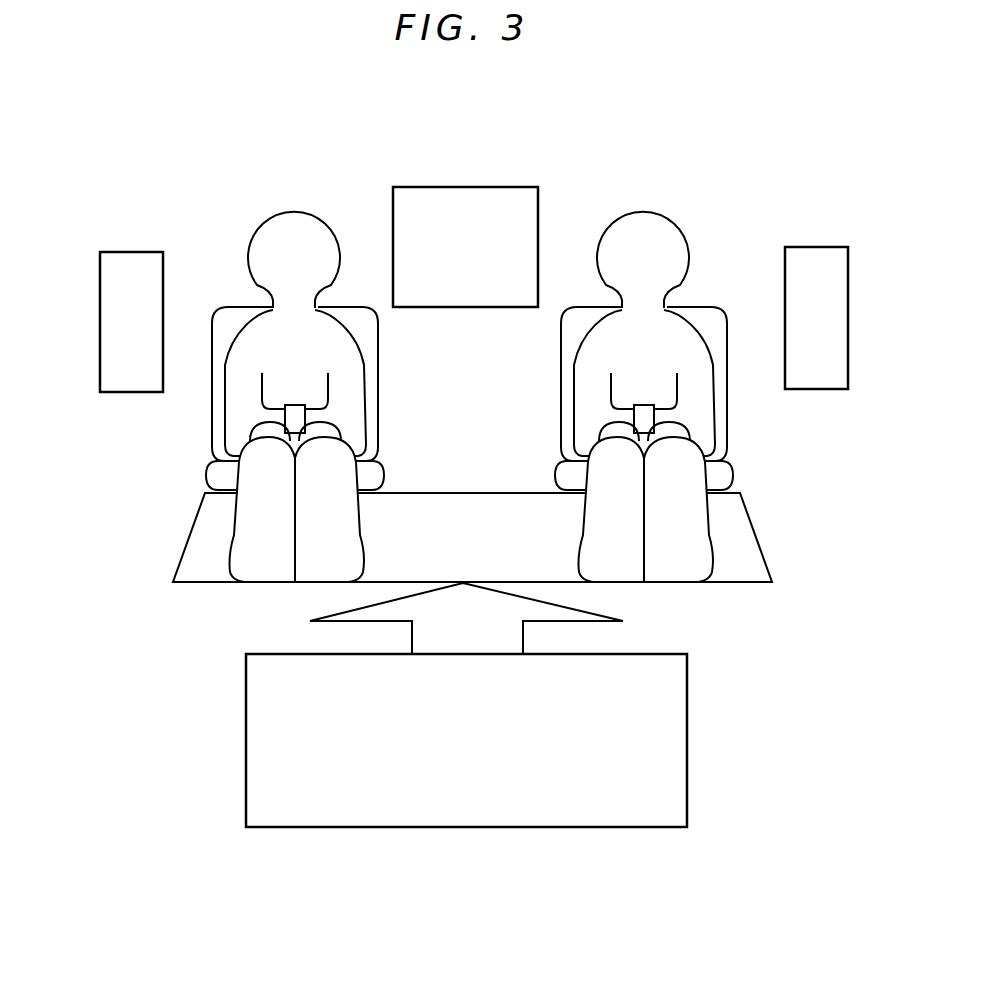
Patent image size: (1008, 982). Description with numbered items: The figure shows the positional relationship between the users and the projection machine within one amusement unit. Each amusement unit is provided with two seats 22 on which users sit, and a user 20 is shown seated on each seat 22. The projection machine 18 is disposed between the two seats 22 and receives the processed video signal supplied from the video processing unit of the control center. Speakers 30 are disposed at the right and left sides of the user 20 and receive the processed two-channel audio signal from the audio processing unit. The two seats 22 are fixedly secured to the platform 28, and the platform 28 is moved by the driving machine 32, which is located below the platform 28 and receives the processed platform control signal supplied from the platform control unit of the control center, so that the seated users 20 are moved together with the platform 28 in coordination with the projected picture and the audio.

The projection machine 18 is at (460, 187).
The user 20 is at (348, 365).
The seat 22 is at (230, 307).
The platform 28 is at (748, 565).
The speaker 30 is at (125, 252).
The driving machine 32 is at (687, 740).